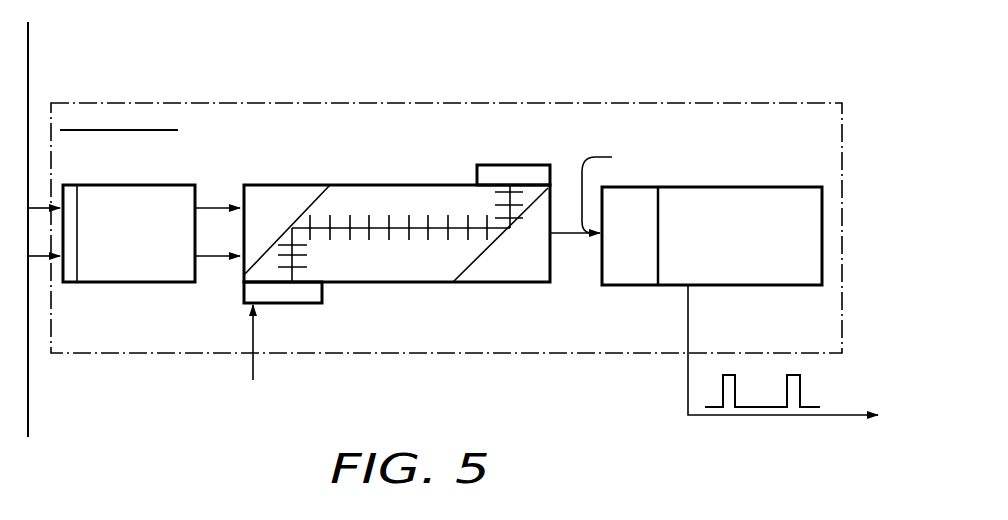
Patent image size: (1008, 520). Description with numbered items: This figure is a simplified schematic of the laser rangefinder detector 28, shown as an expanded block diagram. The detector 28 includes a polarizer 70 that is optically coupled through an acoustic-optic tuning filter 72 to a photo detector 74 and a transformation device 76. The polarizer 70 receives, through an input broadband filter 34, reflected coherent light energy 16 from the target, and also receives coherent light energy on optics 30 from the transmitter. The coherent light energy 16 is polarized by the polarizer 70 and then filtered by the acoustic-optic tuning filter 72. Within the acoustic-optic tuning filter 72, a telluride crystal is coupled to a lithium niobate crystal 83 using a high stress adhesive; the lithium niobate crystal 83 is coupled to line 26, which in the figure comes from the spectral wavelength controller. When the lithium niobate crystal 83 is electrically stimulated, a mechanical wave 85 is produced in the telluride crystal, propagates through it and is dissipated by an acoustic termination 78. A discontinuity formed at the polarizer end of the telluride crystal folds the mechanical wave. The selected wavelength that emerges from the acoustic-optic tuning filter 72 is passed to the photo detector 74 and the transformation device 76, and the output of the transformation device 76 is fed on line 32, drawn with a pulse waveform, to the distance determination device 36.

The reflected coherent light energy 16 is at (28, 75).
The detector 28 is at (175, 103).
The optics 30 is at (71, 401).
The input broadband filter 34 is at (70, 185).
The polarizer 70 is at (170, 185).
The acoustic-optic tuning filter 72 is at (437, 285).
The mechanical wave 85 is at (420, 228).
The acoustic termination 78 is at (533, 165).
The lithium niobate crystal 83 is at (325, 290).
The line 26 is at (253, 360).
The photo detector 74 is at (642, 245).
The transformation device 76 is at (752, 245).
The line 32 is at (686, 365).
The distance determination device 36 is at (773, 451).